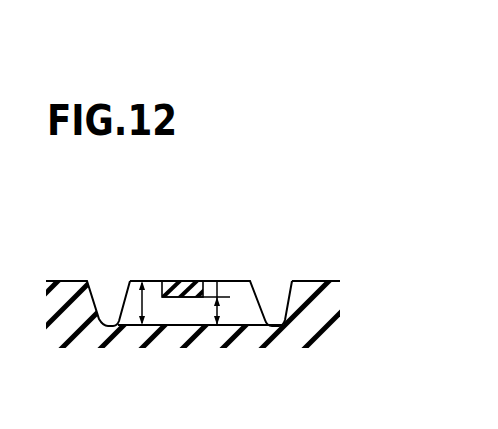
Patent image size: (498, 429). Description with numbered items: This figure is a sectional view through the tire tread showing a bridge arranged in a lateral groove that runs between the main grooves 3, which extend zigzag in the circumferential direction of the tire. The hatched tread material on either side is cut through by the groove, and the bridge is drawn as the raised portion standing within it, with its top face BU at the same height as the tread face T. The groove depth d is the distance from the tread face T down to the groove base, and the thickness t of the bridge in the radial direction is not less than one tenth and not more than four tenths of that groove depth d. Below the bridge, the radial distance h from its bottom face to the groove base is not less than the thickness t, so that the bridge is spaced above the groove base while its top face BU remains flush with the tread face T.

The main groove 3 is at (100, 290).
The top face BU is at (175, 281).
The tread face T is at (233, 280).
The groove depth d is at (142, 303).
The radial distance h is at (220, 308).
The thickness t is at (220, 291).